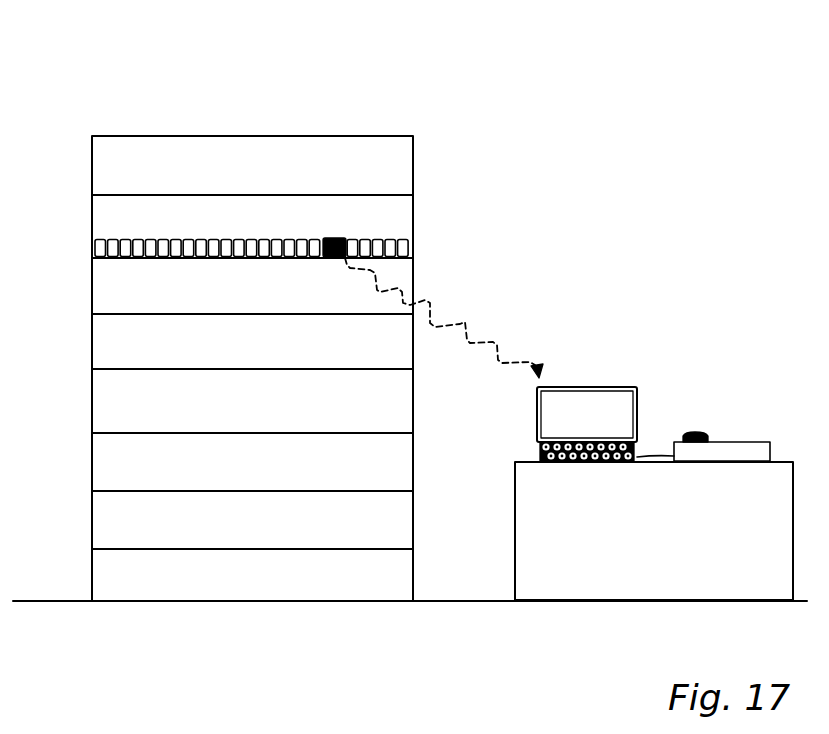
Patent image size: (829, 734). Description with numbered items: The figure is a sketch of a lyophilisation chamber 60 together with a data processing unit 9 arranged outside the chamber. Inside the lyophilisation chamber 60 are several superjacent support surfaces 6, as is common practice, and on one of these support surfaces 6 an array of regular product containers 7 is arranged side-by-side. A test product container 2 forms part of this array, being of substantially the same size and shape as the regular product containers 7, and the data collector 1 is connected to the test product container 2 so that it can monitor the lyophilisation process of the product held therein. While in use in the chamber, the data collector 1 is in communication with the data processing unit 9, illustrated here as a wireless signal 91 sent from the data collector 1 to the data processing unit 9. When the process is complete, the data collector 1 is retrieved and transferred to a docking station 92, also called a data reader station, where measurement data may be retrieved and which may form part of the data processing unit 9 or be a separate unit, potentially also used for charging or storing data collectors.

The lyophilisation chamber 60 is at (396, 134).
The support surface 6 is at (113, 259).
The regular product containers 7 is at (187, 240).
The test product container 2 is at (318, 238).
The data collector 1 is at (336, 238).
The wireless signal 91 is at (463, 322).
The data processing unit 9 is at (620, 376).
The docking station 92 is at (744, 441).